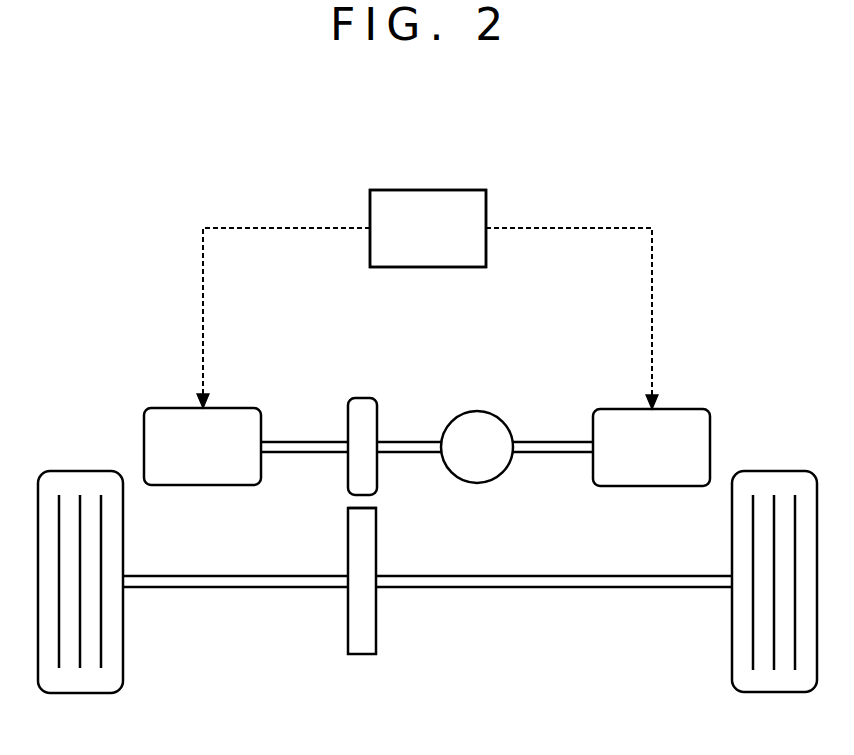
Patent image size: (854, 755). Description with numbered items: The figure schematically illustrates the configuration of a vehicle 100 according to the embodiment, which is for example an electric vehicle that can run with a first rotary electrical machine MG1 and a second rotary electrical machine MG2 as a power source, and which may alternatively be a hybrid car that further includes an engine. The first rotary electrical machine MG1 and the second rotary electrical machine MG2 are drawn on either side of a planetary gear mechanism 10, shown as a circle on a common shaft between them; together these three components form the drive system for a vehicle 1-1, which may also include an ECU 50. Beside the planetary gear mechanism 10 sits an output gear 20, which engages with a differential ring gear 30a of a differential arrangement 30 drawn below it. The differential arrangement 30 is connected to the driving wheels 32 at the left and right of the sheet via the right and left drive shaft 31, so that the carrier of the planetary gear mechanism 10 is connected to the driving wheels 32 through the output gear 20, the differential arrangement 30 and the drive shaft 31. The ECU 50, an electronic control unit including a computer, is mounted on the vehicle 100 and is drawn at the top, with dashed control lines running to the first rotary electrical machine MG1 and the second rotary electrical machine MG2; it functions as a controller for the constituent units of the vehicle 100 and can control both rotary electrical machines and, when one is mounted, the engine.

The vehicle 100 is at (204, 154).
The drive system for a vehicle 1-1 is at (375, 187).
The ECU 50 is at (436, 190).
The first rotary electrical machine MG1 is at (170, 408).
The second rotary electrical machine MG2 is at (686, 409).
The planetary gear mechanism 10 is at (476, 411).
The output gear 20 is at (377, 408).
The differential arrangement 30 is at (377, 548).
The differential ring gear 30a is at (356, 512).
The drive shaft 31 is at (553, 576).
The driving wheels 32 is at (80, 471).